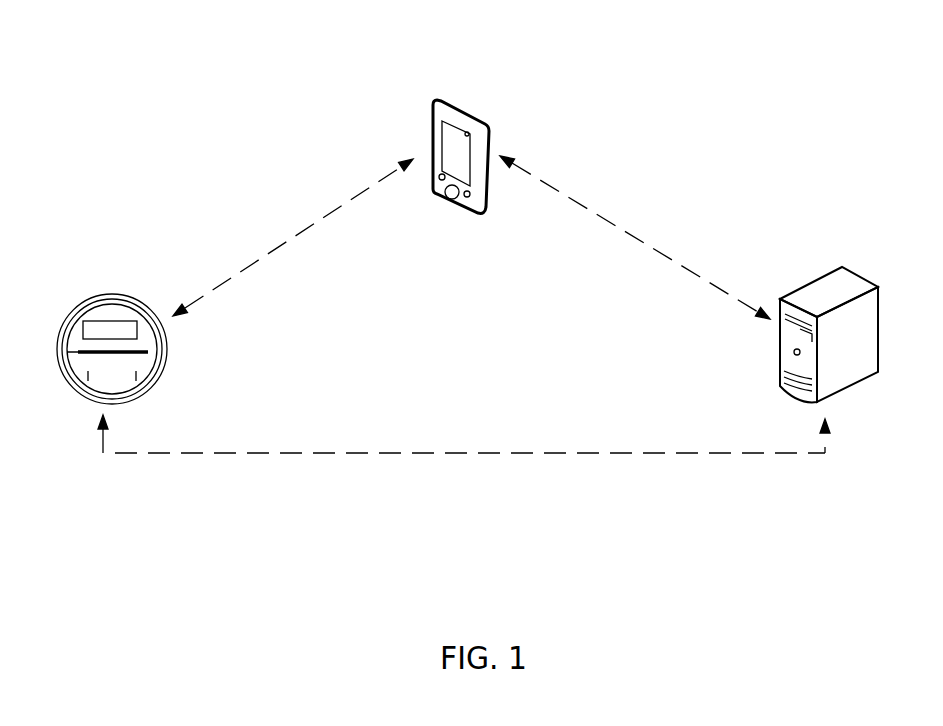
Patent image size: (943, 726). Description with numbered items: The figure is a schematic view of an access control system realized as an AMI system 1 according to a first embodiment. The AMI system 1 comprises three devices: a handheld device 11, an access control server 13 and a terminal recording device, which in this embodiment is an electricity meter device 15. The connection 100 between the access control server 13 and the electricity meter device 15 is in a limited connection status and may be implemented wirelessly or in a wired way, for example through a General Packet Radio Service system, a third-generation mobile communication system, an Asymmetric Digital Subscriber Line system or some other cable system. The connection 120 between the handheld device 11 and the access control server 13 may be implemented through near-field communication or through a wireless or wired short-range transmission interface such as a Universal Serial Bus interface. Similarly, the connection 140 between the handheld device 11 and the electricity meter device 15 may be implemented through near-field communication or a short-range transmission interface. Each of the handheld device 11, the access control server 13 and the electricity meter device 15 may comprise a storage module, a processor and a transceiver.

The AMI system 1 is at (763, 42).
The handheld device 11 is at (458, 107).
The access control server 13 is at (842, 268).
The electricity meter device 15 is at (130, 297).
The connection 100 is at (442, 455).
The connection 120 is at (590, 210).
The connection 140 is at (312, 222).